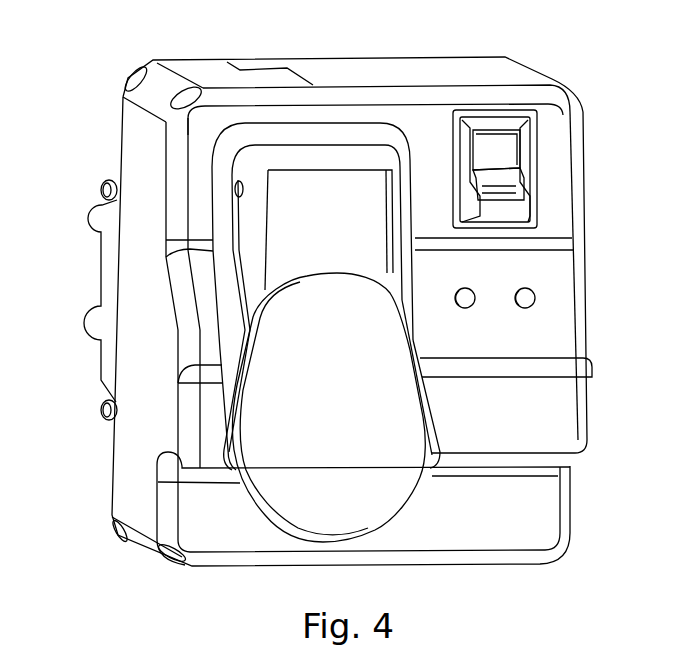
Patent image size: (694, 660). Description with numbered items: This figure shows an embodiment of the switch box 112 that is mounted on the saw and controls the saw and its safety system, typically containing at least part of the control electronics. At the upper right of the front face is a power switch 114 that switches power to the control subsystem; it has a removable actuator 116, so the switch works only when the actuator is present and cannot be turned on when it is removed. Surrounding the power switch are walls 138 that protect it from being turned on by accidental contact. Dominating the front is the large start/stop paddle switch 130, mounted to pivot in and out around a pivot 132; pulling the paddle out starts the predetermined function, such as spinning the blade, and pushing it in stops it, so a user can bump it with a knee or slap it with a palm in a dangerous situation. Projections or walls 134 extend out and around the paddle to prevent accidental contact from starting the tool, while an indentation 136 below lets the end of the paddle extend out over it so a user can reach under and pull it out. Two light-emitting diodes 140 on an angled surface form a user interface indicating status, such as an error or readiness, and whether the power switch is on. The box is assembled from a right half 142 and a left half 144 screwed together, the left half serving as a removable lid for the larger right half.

The switch box 112 is at (531, 588).
The power switch 114 is at (496, 160).
The removable actuator 116 is at (524, 189).
The start/stop paddle switch 130 is at (318, 312).
The pivot 132 is at (233, 184).
The projections or walls 134 is at (210, 440).
The indentation 136 is at (423, 512).
The walls 138 is at (462, 188).
The light-emitting diodes 140 is at (473, 298).
The right half 142 is at (463, 73).
The left half 144 is at (200, 77).